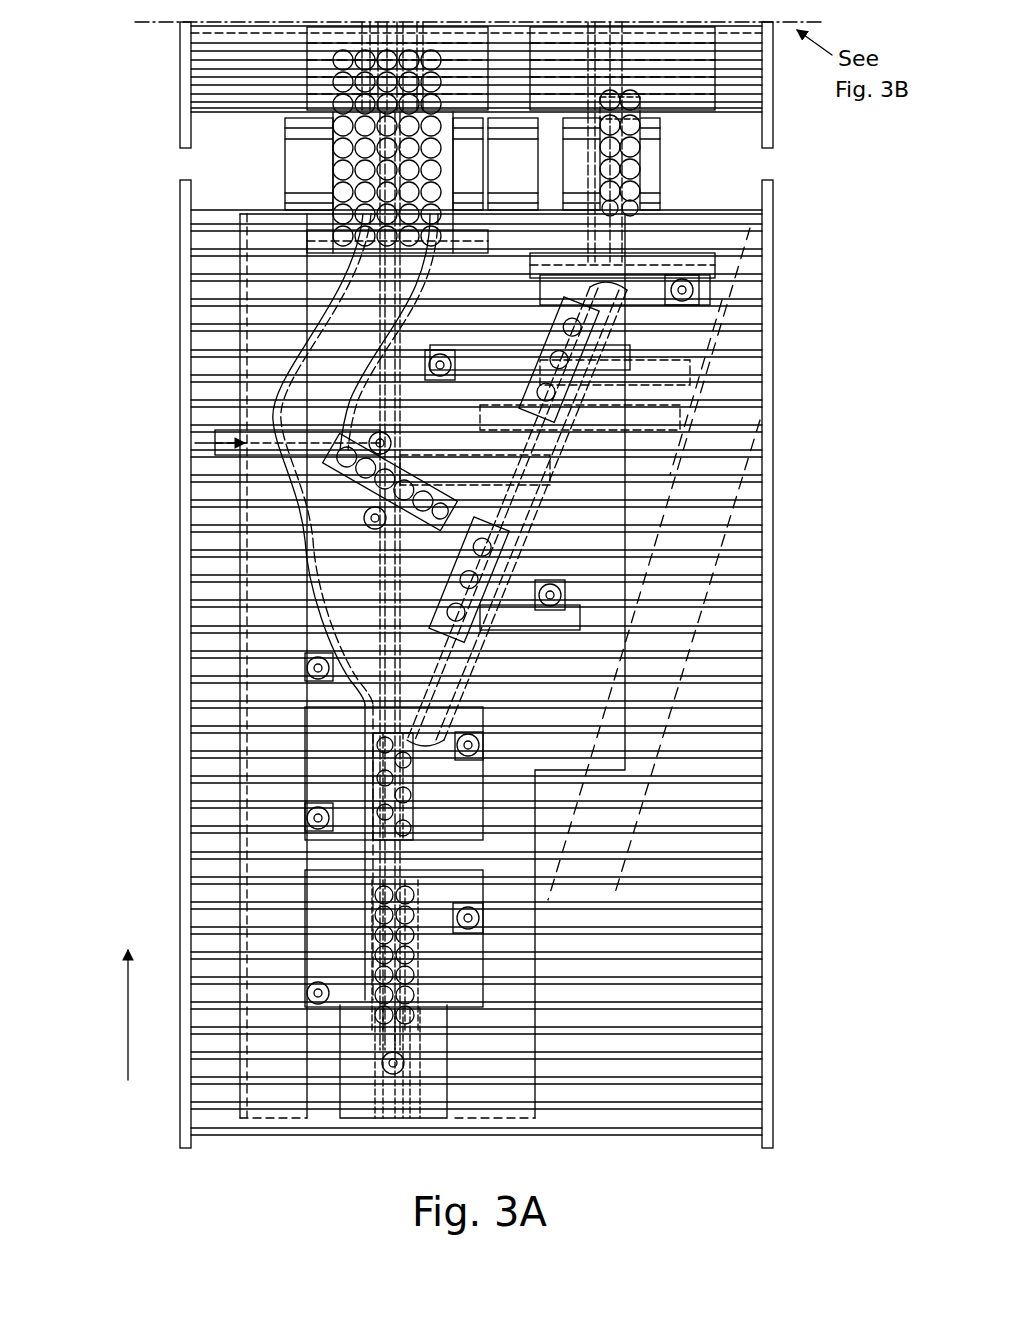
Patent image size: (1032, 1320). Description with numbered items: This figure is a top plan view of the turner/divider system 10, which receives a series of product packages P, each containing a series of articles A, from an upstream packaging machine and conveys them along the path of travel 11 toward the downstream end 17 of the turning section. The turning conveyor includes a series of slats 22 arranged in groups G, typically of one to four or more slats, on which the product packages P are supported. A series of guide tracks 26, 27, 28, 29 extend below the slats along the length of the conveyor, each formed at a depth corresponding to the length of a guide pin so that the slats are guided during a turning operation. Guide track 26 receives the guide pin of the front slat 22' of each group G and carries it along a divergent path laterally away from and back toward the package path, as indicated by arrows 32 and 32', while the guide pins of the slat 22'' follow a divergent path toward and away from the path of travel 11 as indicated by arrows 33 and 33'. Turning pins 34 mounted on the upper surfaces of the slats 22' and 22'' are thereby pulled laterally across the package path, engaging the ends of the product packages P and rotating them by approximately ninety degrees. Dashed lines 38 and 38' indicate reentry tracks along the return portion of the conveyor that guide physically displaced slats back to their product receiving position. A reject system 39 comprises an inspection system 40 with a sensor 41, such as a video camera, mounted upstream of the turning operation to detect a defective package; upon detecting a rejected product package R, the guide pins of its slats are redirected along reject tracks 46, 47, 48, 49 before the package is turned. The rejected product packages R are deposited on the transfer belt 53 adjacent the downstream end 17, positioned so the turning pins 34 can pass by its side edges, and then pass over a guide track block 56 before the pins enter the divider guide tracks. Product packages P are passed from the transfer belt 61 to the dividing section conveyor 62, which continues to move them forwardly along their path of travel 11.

The turner/divider system 10 is at (830, 494).
The path of travel 11 is at (122, 1030).
The downstream end 17 is at (255, 190).
The slats 22 is at (269, 488).
The front slat 22' is at (226, 417).
The slat 22'' is at (229, 544).
The guide track 26 is at (350, 770).
The guide track 27 is at (370, 810).
The guide track 28 is at (377, 617).
The guide track 29 is at (377, 568).
The arrow 32 is at (271, 332).
The arrow 32' is at (232, 459).
The arrow 33 is at (617, 511).
The arrow 33' is at (637, 522).
The turning pins 34 is at (690, 290).
The reentry track 38 is at (205, 666).
The reentry track 38' is at (697, 564).
The reject system 39 is at (393, 1097).
The inspection system 40 is at (385, 1072).
The sensor 41 is at (425, 1020).
The reject track 46 is at (548, 240).
The reject track 47 is at (590, 265).
The reject track 48 is at (500, 435).
The reject track 49 is at (492, 516).
The transfer belt 53 is at (640, 118).
The guide track block 56 is at (655, 140).
The transfer belt 61 is at (300, 155).
The dividing section conveyor 62 is at (197, 55).
The articles A is at (418, 1010).
The group of slats G is at (492, 950).
The product packages P is at (380, 1020).
The rejected product package R is at (500, 595).